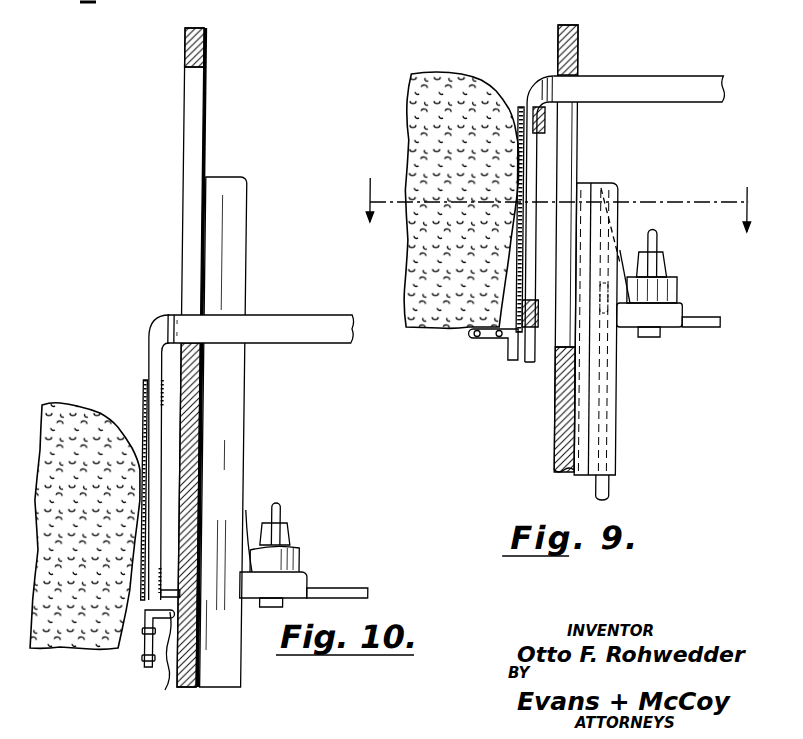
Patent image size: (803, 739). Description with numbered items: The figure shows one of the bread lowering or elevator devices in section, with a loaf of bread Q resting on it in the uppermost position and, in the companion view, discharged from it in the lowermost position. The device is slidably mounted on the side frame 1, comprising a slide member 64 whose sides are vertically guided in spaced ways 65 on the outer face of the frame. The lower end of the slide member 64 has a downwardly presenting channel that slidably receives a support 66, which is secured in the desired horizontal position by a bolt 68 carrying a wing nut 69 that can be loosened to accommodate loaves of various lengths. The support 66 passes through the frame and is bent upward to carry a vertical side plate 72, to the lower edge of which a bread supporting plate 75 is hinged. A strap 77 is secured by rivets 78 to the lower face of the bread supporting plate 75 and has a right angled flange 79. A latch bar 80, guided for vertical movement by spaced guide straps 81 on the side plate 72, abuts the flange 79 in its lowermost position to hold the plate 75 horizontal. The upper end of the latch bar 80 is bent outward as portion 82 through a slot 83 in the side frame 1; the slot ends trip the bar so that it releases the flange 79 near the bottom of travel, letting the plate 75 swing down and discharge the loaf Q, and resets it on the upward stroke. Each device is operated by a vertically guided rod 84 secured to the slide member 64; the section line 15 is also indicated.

In FIG. 10, the side frame 1 is at (209, 48).
In FIG. 9, the side frame 1 is at (561, 445).
In FIG. 10, the slot 83 is at (187, 145).
In FIG. 9, the slot 83 is at (572, 137).
In FIG. 10, the outwardly bent portion 82 is at (313, 317).
In FIG. 9, the outwardly bent portion 82 is at (688, 81).
In FIG. 10, the latch bar 80 is at (154, 360).
In FIG. 9, the latch bar 80 is at (530, 182).
In FIG. 9, the guide straps 81 is at (527, 99).
In FIG. 10, the vertical side plate 72 is at (147, 421).
In FIG. 9, the vertical side plate 72 is at (519, 283).
In FIG. 10, the loaf of bread Q is at (85, 404).
In FIG. 9, the loaf of bread Q is at (433, 78).
In FIG. 10, the bread supporting plate 75 is at (145, 638).
In FIG. 9, the bread supporting plate 75 is at (472, 331).
In FIG. 10, the strap 77 is at (153, 659).
In FIG. 9, the strap 77 is at (500, 340).
In FIG. 9, the rivets 78 is at (478, 342).
In FIG. 10, the right angled flange 79 is at (167, 662).
In FIG. 9, the right angled flange 79 is at (521, 362).
In FIG. 10, the slide member 64 is at (252, 512).
In FIG. 9, the slide member 64 is at (604, 183).
In FIG. 10, the ways 65 is at (307, 549).
In FIG. 9, the ways 65 is at (624, 275).
In FIG. 10, the support 66 is at (347, 588).
In FIG. 9, the support 66 is at (711, 320).
In FIG. 10, the bolt 68 is at (289, 604).
In FIG. 9, the bolt 68 is at (655, 335).
In FIG. 10, the wing nut 69 is at (283, 514).
In FIG. 9, the wing nut 69 is at (659, 244).
In FIG. 9, the vertically guided rod 84 is at (614, 487).
In FIG. 9, the section line 15- 15 is at (556, 188).